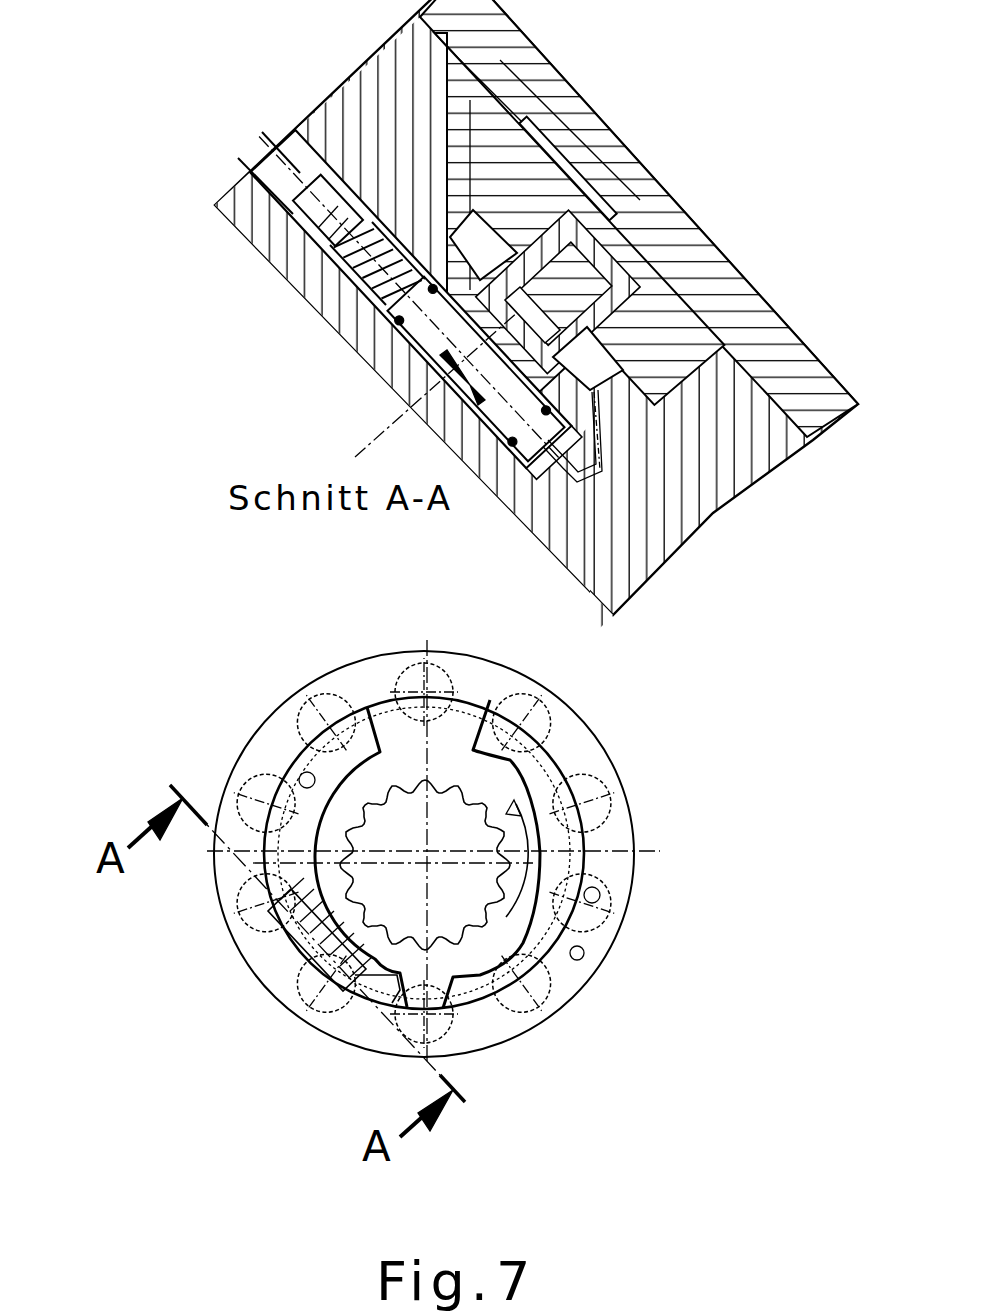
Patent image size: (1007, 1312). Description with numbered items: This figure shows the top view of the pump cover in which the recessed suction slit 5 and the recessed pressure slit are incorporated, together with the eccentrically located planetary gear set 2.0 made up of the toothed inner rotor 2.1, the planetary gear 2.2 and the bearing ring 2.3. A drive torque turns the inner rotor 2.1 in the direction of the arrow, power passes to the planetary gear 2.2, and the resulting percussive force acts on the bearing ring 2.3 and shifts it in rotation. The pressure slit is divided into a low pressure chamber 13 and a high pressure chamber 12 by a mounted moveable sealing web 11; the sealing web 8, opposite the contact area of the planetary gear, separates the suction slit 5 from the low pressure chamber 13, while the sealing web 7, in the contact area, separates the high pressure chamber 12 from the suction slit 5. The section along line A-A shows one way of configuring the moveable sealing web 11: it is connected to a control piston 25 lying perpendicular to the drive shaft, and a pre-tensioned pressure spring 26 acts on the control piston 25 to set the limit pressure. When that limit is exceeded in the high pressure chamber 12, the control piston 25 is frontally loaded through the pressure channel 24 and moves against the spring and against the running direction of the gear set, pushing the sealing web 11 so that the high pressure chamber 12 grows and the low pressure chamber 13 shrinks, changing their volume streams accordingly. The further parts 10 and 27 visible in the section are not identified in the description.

The planetary gear set 2.0 is at (637, 238).
The inner rotor 2.1 is at (550, 847).
The planetary gear 2.2 is at (592, 895).
The bearing ring 2.3 is at (577, 953).
The suction slit 5 is at (540, 768).
The sealing web 7 is at (438, 978).
The sealing web 8 is at (467, 717).
The valve 10 is at (558, 238).
The moveable sealing web 11 is at (540, 317).
The high pressure chamber 12 is at (598, 365).
The low pressure chamber 13 is at (472, 238).
The pressure channel 24 is at (597, 473).
The control piston 25 is at (422, 330).
The pressure spring 26 is at (352, 267).
The plug 27 is at (327, 233).